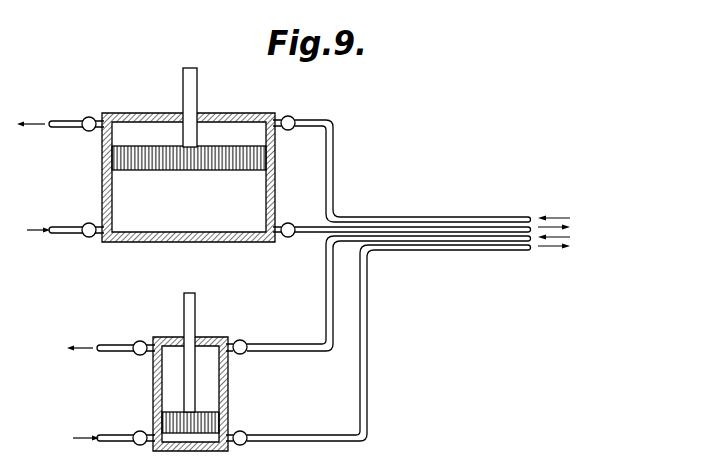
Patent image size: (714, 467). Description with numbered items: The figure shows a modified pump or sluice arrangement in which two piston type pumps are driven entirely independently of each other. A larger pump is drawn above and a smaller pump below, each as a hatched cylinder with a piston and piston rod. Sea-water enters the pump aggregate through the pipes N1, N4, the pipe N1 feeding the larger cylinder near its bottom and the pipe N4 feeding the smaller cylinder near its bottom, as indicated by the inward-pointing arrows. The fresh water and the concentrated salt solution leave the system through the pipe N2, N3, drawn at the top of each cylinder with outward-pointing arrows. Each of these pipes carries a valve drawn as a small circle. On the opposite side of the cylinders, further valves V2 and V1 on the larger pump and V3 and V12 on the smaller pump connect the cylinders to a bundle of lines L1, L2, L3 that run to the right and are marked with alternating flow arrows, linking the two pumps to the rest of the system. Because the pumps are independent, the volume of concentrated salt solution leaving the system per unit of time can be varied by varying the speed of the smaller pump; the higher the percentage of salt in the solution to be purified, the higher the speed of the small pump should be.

The pipe N1 is at (65, 229).
The pipe N2 is at (60, 123).
The pipe N3 is at (110, 349).
The pipe N4 is at (141, 431).
The valve V1 is at (290, 223).
The valve V2 is at (289, 116).
The valve V3 is at (244, 340).
The valve V12 is at (243, 431).
The line (pipe) L1 is at (405, 245).
The line (pipe) L2 is at (415, 219).
The line (pipe) L3 is at (467, 238).